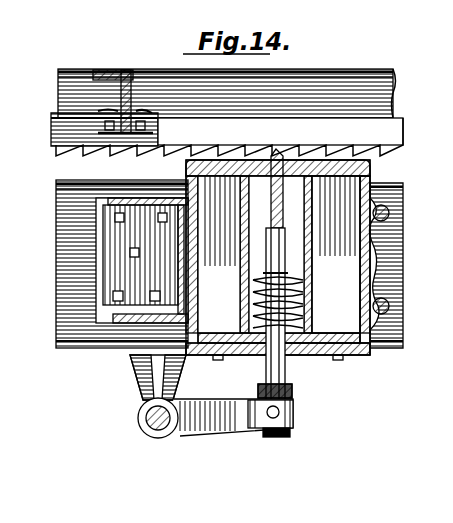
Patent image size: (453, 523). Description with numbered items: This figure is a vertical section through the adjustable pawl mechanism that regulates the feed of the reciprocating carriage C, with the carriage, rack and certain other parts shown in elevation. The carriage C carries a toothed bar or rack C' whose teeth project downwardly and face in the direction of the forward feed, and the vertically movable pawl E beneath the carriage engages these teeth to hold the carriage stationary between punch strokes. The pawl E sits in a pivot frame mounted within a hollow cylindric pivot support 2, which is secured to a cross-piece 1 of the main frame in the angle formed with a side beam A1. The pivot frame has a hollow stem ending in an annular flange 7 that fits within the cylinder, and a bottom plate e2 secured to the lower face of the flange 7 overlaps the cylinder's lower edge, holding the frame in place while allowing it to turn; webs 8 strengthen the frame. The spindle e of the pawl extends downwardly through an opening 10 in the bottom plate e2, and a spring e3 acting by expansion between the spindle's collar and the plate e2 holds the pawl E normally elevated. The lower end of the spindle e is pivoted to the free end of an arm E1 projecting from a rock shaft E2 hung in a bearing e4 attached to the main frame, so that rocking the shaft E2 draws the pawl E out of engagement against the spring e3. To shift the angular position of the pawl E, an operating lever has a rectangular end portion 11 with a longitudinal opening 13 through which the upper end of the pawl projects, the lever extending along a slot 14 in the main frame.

The reciprocating carriage C is at (223, 95).
The toothed bar or rack C' is at (229, 148).
The side beam A1 is at (48, 243).
The cross-piece 1 is at (122, 272).
The hollow cylindric pivot support 2 is at (190, 256).
The pawl E is at (272, 152).
The longitudinal opening 13 is at (362, 158).
The spindle e is at (328, 348).
The bottom plate e2 is at (348, 348).
The spring e3 is at (240, 348).
The bearing e4 is at (128, 358).
The annular flange 7 is at (329, 347).
The webs 8 is at (336, 254).
The opening 10 is at (278, 366).
The rectangular end portion 11 is at (268, 141).
The arm E1 is at (215, 412).
The rock shaft E2 is at (140, 420).
The slot 14 is at (26, 184).